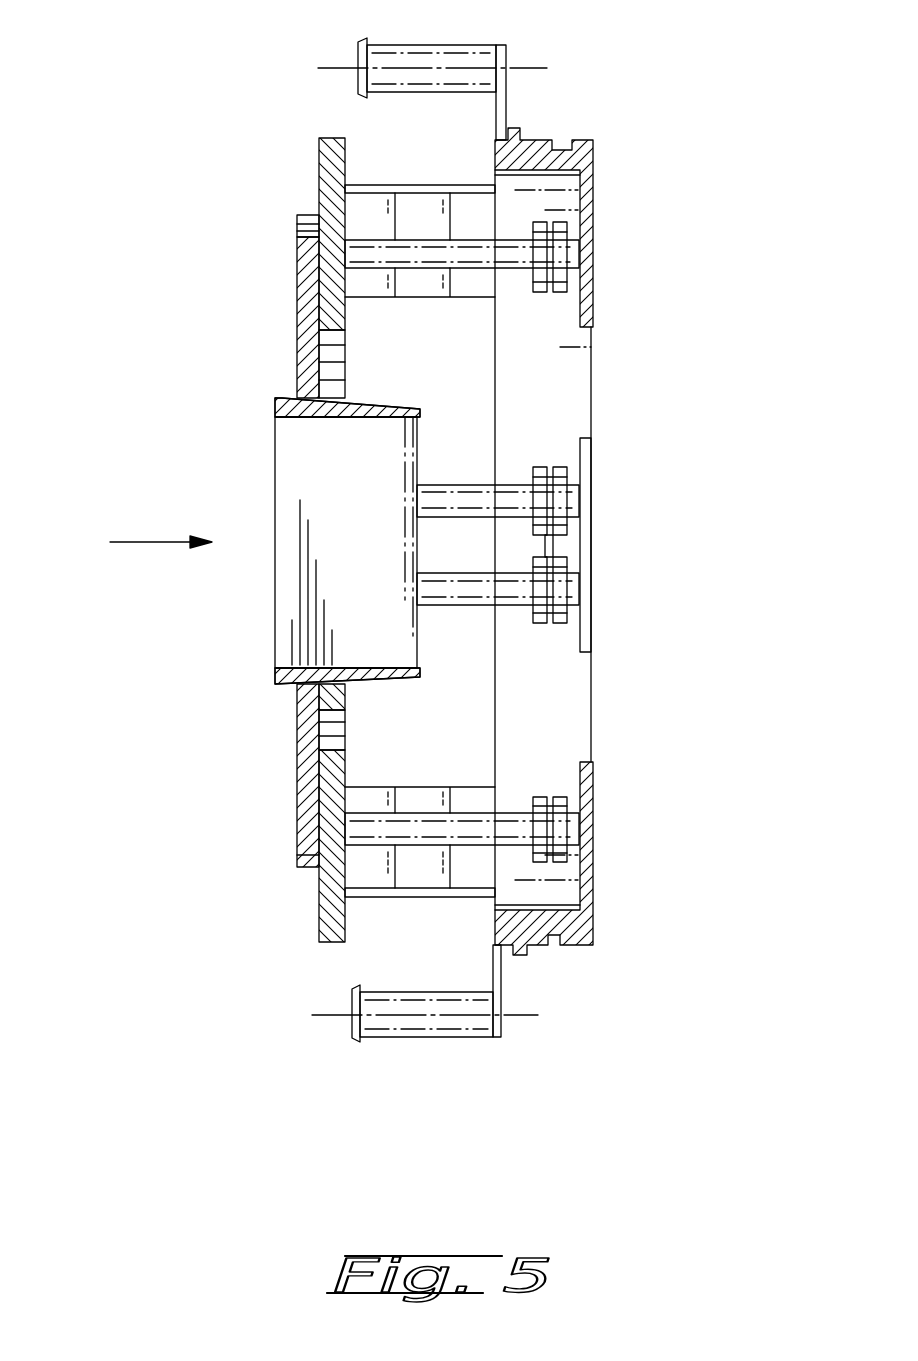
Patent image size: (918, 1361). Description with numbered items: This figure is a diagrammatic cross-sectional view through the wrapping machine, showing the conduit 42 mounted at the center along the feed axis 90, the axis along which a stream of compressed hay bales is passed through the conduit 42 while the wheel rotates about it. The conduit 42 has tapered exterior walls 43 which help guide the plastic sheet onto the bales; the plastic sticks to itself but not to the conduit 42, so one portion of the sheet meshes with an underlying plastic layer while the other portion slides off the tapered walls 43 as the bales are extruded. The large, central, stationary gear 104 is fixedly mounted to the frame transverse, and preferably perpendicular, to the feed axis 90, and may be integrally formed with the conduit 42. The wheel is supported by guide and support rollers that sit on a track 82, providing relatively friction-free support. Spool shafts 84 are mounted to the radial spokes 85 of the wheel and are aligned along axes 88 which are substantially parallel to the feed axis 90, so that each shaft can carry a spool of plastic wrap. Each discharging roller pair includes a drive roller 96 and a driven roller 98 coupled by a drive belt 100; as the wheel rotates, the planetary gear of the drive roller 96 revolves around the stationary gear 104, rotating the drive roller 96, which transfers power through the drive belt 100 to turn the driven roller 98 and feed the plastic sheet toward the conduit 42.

The conduit 42 is at (303, 418).
The tapered exterior walls 43 is at (383, 400).
The track 82 is at (555, 940).
The spool shafts 84 is at (430, 48).
The radial spokes 85 is at (509, 108).
The axes 88 is at (340, 68).
The feed axis 90 is at (145, 542).
The drive roller 96 is at (472, 497).
The driven roller 98 is at (450, 590).
The drive belt 100 is at (557, 543).
The stationary gear 104 is at (310, 330).